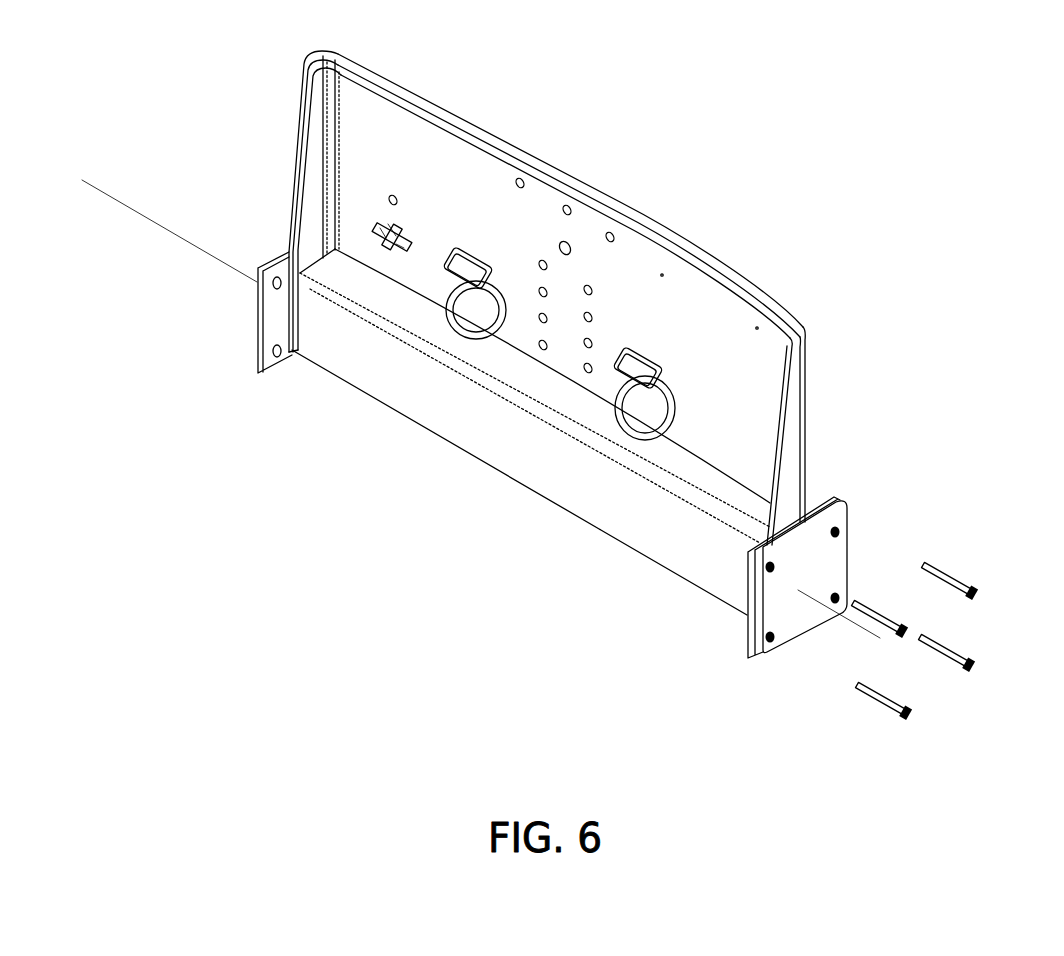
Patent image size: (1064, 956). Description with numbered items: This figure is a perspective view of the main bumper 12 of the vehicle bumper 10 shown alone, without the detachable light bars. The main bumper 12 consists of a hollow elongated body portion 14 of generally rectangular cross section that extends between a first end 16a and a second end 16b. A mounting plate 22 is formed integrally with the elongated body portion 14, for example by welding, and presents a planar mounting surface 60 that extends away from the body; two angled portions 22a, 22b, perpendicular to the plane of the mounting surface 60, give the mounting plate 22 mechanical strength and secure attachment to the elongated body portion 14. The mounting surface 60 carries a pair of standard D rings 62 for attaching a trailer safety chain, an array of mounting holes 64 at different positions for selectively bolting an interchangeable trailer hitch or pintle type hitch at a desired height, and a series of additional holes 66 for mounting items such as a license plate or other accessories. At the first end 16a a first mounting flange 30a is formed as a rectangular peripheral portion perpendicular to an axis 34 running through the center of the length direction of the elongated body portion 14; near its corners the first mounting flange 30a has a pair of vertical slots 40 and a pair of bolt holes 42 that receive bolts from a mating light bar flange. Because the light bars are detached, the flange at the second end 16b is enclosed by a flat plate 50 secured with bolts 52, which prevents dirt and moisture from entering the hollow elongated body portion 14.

The vehicle bumper 10 is at (905, 179).
The main bumper 12 is at (277, 593).
The elongated body portion 14 is at (482, 457).
The first end 16a is at (298, 347).
The second end 16b is at (722, 604).
The mounting plate 22 is at (378, 77).
The first angled portion 22a is at (301, 95).
The second angled portion 22b is at (809, 396).
The first mounting flange 30a is at (258, 312).
The axis 34 is at (112, 197).
The slots 40 is at (267, 265).
The bolt holes 42 is at (275, 353).
The flat plate 50 is at (848, 552).
The bolts 52 is at (970, 587).
The mounting surface 60 is at (388, 172).
The D rings 62 is at (463, 315).
The array of mounting holes 64 is at (647, 322).
The additional holes 66 is at (583, 190).